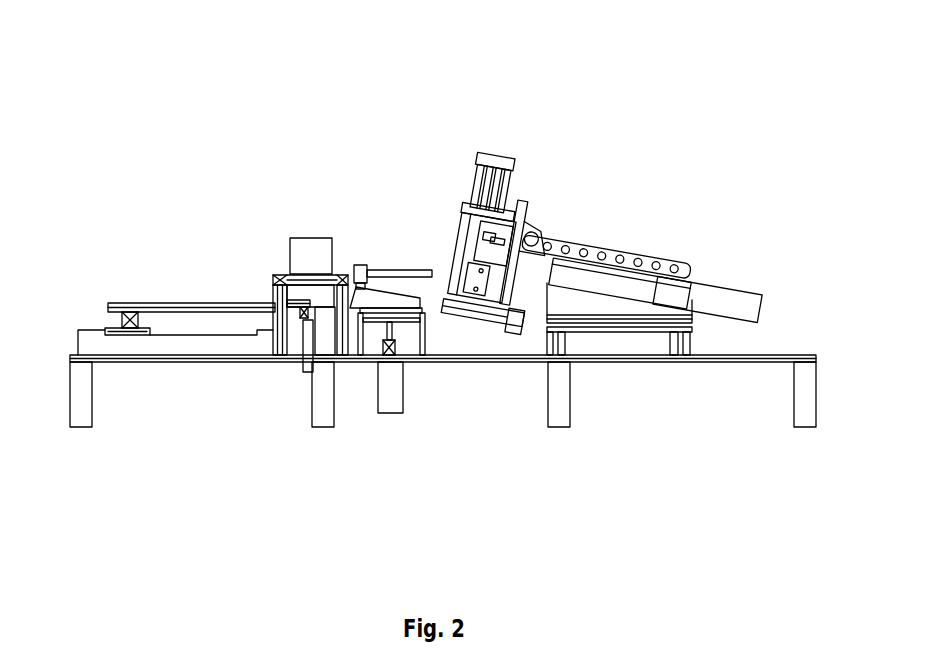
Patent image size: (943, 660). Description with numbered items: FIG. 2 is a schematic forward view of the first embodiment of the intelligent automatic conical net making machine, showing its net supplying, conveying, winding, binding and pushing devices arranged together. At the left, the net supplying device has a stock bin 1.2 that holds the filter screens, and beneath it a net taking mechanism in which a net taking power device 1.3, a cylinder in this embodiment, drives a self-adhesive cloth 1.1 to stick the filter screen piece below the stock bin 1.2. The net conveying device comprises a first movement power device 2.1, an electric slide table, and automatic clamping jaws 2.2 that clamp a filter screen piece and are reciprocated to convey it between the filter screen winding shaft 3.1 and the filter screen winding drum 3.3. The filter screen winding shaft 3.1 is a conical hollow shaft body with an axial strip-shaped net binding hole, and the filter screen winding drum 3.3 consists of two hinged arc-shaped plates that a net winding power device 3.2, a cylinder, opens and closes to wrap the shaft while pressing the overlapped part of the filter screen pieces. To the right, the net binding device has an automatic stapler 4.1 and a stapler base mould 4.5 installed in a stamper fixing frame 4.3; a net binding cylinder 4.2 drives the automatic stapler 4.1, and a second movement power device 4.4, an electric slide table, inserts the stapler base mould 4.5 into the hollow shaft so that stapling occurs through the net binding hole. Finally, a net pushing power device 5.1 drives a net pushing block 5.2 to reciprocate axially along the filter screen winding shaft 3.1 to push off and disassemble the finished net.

The self-adhesive cloth 1.1 is at (275, 272).
The stock bin 1.2 is at (304, 262).
The net taking power device 1.3 is at (308, 343).
The first movement power device 2.1 is at (163, 344).
The automatic clamping jaw 2.2 is at (300, 305).
The filter screen winding shaft 3.1 is at (370, 297).
The net winding power device 3.2 is at (385, 316).
The filter screen winding drum 3.3 is at (397, 316).
The automatic stapler 4.1 is at (455, 267).
The net binding cylinder 4.2 is at (490, 160).
The stamper fixing frame 4.3 is at (560, 245).
The second movement power device 4.4 is at (727, 302).
The stapler base mould 4.5 is at (447, 307).
The net pushing power device 5.1 is at (358, 264).
The net pushing block 5.2 is at (368, 270).